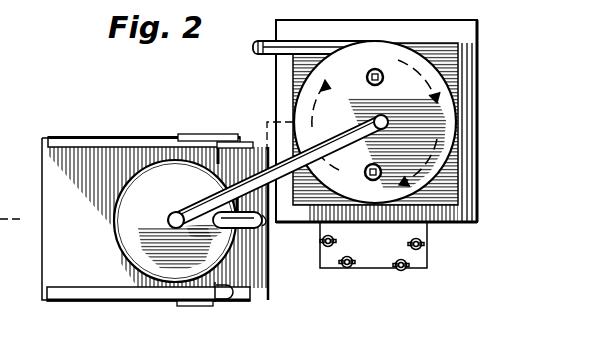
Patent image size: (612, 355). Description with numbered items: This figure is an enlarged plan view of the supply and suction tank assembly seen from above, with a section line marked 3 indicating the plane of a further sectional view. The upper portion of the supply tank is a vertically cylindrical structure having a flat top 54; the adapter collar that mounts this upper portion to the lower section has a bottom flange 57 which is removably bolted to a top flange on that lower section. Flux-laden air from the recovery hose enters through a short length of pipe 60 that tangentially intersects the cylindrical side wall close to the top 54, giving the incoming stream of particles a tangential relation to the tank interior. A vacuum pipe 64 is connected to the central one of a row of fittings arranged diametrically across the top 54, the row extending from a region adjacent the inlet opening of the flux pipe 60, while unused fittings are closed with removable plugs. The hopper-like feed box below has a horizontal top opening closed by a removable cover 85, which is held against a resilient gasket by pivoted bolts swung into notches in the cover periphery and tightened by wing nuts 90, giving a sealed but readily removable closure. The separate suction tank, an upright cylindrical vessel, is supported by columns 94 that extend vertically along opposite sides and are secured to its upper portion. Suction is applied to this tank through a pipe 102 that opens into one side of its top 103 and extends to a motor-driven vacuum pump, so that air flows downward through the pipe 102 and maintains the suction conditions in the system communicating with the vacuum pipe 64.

The flat top 54 is at (440, 156).
The bottom flange 57 is at (468, 210).
The pipe 60 is at (270, 58).
The vacuum pipe 64 is at (338, 112).
The removable cover 85 is at (375, 268).
The wing nuts 90 is at (403, 271).
The columns 94 is at (219, 297).
The pipe 102 is at (250, 226).
The top 103 is at (122, 234).
The section line 3- 3 is at (487, 122).